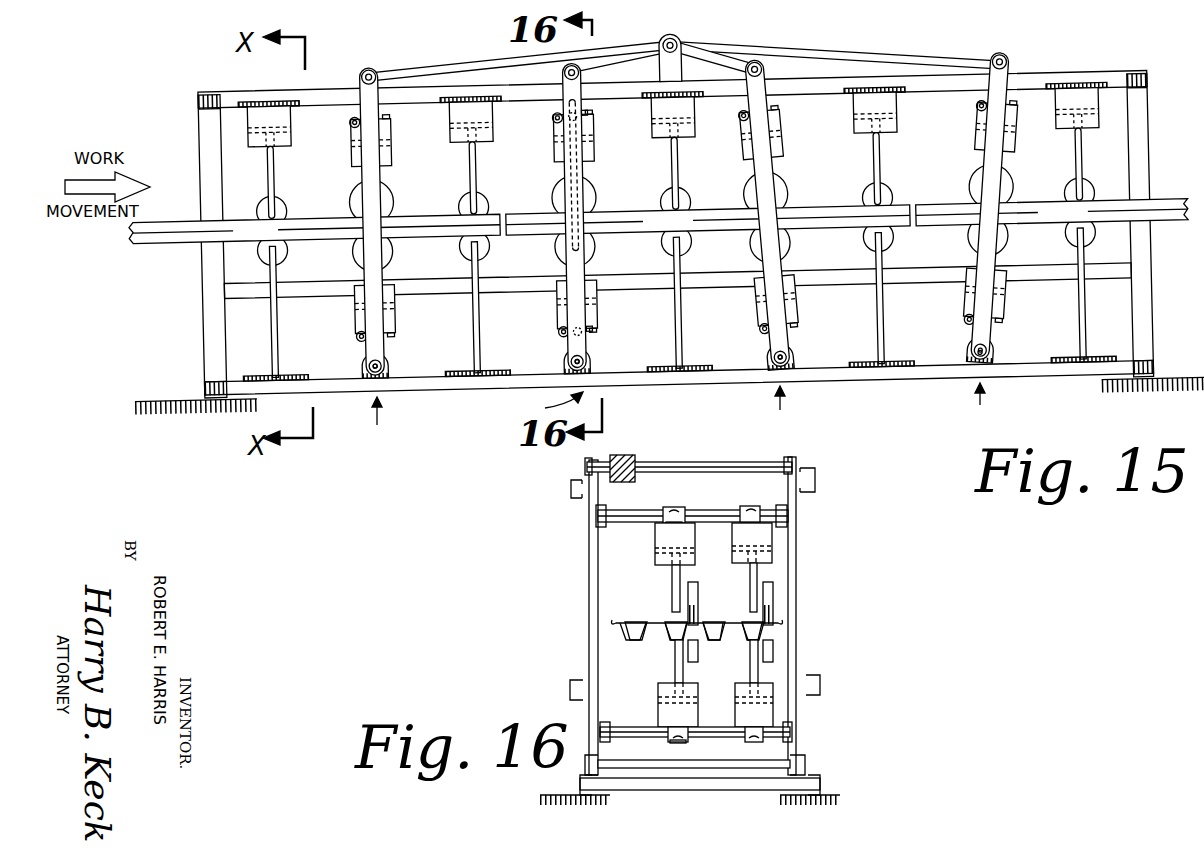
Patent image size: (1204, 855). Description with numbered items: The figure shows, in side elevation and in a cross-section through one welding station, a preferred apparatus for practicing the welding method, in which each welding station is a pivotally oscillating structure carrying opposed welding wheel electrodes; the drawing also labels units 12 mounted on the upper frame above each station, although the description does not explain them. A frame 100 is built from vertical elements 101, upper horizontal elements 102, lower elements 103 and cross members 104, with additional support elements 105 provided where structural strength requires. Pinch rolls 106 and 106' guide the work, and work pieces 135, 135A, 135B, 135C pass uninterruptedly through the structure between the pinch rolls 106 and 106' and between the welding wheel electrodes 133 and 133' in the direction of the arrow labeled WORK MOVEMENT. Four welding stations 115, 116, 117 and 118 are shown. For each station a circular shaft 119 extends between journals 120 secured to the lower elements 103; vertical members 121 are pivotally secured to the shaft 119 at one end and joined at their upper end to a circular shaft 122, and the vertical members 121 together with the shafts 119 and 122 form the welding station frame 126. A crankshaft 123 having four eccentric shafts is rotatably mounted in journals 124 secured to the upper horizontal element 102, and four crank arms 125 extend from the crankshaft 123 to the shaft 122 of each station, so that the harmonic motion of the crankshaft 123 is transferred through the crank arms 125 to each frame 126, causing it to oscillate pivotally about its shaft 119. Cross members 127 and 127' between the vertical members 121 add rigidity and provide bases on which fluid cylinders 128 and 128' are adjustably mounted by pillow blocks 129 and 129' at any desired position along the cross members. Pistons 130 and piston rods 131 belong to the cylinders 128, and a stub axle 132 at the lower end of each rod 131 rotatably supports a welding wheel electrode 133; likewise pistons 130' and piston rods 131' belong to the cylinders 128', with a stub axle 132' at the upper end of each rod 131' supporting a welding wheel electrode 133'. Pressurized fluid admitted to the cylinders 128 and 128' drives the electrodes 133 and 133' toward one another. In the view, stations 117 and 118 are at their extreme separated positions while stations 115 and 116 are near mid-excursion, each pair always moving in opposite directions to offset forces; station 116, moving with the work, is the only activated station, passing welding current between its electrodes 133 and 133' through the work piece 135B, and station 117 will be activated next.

In FIG. 15, the fluid cylinder 12 is at (673, 114).
In FIG. 15, the frame 100 is at (1090, 35).
In FIG. 15, the vertical elements 101 is at (670, 236).
In FIG. 15, the upper horizontal elements 102 is at (672, 79).
In FIG. 16, the upper horizontal elements 102 is at (685, 477).
In FIG. 15, the lower elements 103 is at (669, 388).
In FIG. 16, the lower elements 103 is at (698, 784).
In FIG. 15, the cross members 104 is at (677, 218).
In FIG. 15, the additional support elements 105 is at (677, 287).
In FIG. 16, the additional support elements 105 is at (690, 678).
In FIG. 15, the pinch roll 106 is at (656, 177).
In FIG. 15, the pinch roll 106' is at (670, 298).
In FIG. 15, the welding station 115 is at (377, 424).
In FIG. 15, the welding station 116 is at (544, 406).
In FIG. 15, the welding station 117 is at (772, 408).
In FIG. 15, the welding station 118 is at (977, 404).
In FIG. 15, the circular shaft 119 is at (652, 357).
In FIG. 16, the circular shaft 119 is at (694, 753).
In FIG. 15, the journals 120 is at (702, 357).
In FIG. 16, the journals 120 is at (688, 752).
In FIG. 15, the vertical members 121 is at (692, 213).
In FIG. 16, the vertical members 121 is at (685, 616).
In FIG. 15, the circular shaft 122 is at (686, 71).
In FIG. 16, the circular shaft 122 is at (688, 456).
In FIG. 15, the crankshaft 123 is at (650, 49).
In FIG. 15, the journals 124 is at (712, 46).
In FIG. 15, the crank arms 125 is at (683, 52).
In FIG. 16, the crank arms 125 is at (636, 459).
In FIG. 16, the welding station frame 126 is at (518, 576).
In FIG. 15, the cross member 127 is at (587, 108).
In FIG. 16, the cross member 127 is at (685, 504).
In FIG. 15, the cross member 127' is at (601, 337).
In FIG. 16, the cross member 127' is at (649, 749).
In FIG. 15, the fluid cylinder 128 is at (694, 133).
In FIG. 16, the fluid cylinder 128 is at (713, 544).
In FIG. 15, the fluid cylinder 128' is at (697, 302).
In FIG. 16, the fluid cylinder 128' is at (716, 705).
In FIG. 15, the pillow blocks 129 is at (644, 112).
In FIG. 16, the pillow blocks 129 is at (692, 505).
In FIG. 15, the pillow blocks 129' is at (641, 330).
In FIG. 16, the pillow blocks 129' is at (697, 741).
In FIG. 15, the piston 130 is at (661, 140).
In FIG. 16, the piston 130 is at (686, 554).
In FIG. 15, the piston 130' is at (655, 302).
In FIG. 16, the piston 130' is at (715, 702).
In FIG. 15, the piston rod 131 is at (547, 174).
In FIG. 16, the piston rod 131 is at (714, 587).
In FIG. 16, the piston rod 131' is at (693, 661).
In FIG. 16, the stub axle 132 is at (694, 619).
In FIG. 16, the stub axle 132' is at (691, 636).
In FIG. 15, the welding wheel electrode 133 is at (661, 193).
In FIG. 16, the welding wheel electrode 133 is at (751, 598).
In FIG. 15, the welding wheel electrode 133' is at (677, 242).
In FIG. 16, the welding wheel electrode 133' is at (762, 652).
In FIG. 16, the work piece 135 is at (691, 608).
In FIG. 15, the work piece 135A is at (314, 228).
In FIG. 15, the work piece 135B is at (708, 220).
In FIG. 15, the work piece 135C is at (1052, 212).